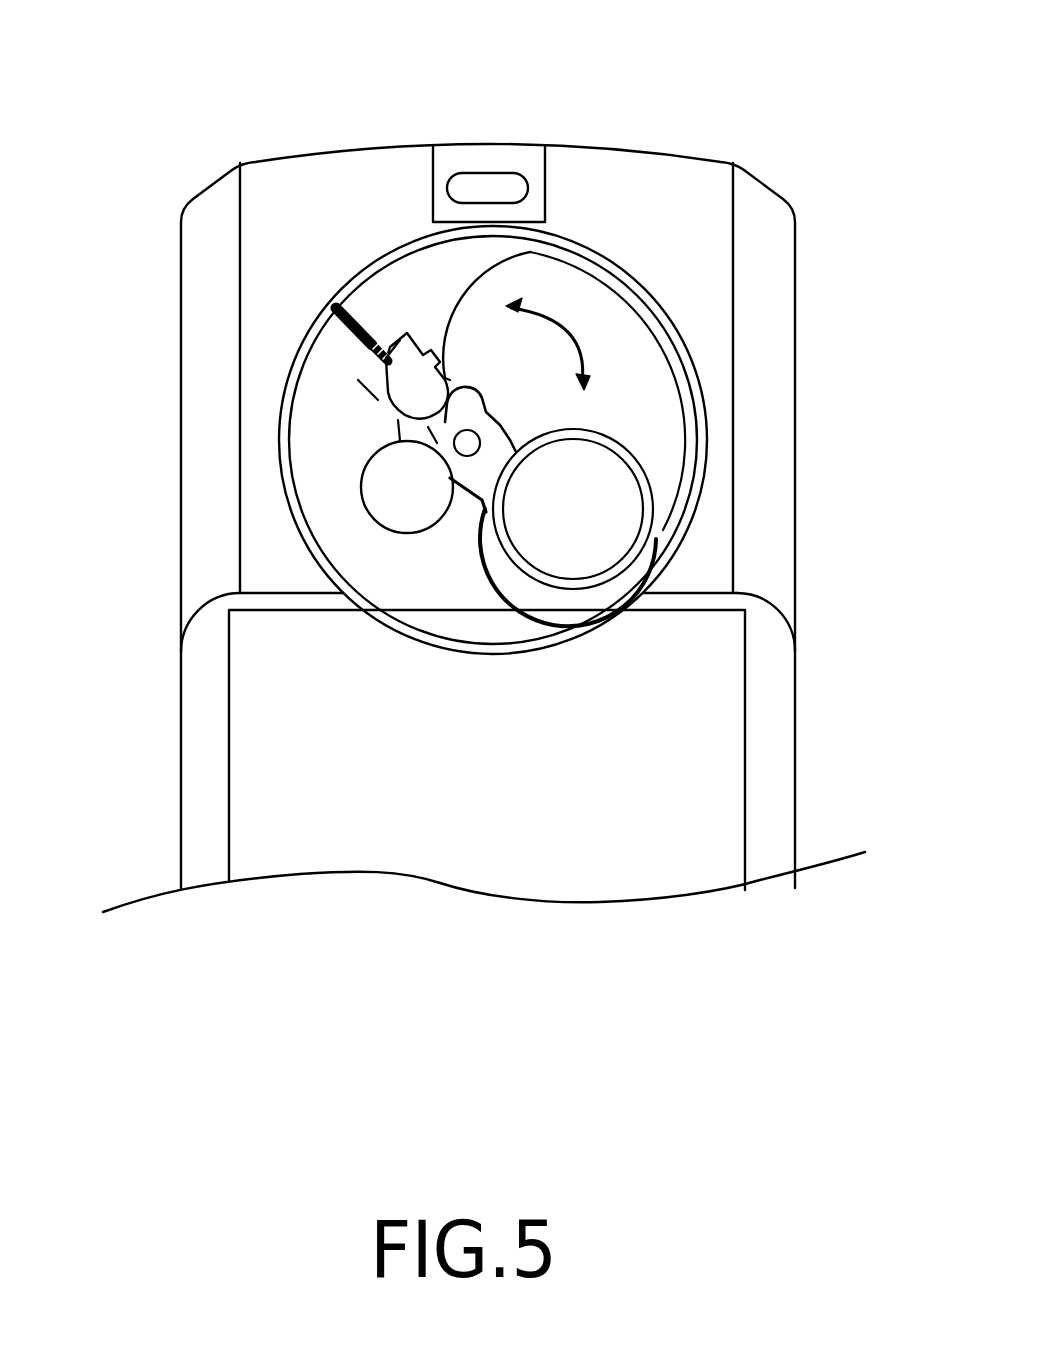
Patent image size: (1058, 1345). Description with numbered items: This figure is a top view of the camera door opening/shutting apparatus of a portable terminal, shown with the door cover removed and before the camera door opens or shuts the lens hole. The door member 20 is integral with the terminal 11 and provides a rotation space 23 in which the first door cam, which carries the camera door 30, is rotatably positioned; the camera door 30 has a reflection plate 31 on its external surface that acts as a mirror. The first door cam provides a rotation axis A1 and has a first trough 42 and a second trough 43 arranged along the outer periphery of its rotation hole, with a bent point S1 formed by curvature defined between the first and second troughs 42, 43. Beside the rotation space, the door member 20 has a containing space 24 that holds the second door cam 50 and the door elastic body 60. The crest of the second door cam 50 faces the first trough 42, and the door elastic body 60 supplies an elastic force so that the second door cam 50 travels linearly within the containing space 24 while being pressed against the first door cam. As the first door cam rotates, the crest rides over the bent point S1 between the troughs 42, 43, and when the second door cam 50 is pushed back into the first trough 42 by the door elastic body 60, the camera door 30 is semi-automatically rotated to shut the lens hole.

The terminal 11 is at (644, 124).
The door member 20 is at (652, 287).
The rotation space 23 is at (643, 370).
The containing space 24 is at (372, 375).
The camera door 30 is at (652, 468).
The reflection plate 31 is at (612, 528).
The first trough 42 is at (452, 452).
The second trough 43 is at (494, 410).
The second door cam 50 is at (383, 412).
The door elastic body 60 is at (335, 312).
The rotation axis A1 is at (466, 443).
The bent point S1 is at (467, 383).